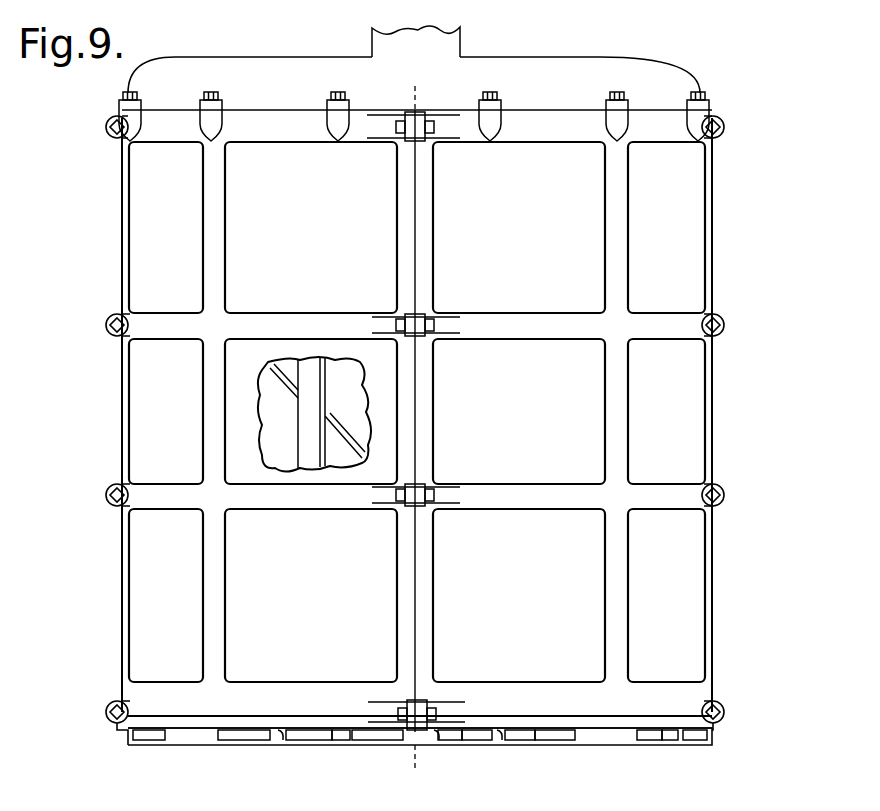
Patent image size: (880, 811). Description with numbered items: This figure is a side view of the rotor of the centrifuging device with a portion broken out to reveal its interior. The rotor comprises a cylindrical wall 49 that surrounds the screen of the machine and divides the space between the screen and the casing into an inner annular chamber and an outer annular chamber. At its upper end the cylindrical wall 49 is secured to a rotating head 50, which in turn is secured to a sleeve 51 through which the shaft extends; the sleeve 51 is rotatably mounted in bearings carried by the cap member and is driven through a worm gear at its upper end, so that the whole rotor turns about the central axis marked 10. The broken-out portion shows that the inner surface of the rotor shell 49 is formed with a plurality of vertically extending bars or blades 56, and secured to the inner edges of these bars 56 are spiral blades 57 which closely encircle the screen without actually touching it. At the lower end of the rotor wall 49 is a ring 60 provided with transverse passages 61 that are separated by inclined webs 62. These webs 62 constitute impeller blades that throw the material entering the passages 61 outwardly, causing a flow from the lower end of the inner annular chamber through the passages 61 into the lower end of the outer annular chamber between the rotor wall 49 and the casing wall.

The center bar 10 is at (416, 432).
The cylindrical wall 49 is at (680, 411).
The rotating head 50 is at (610, 70).
The sleeve 51 is at (445, 48).
The vertically extending bars or blades 56 is at (305, 428).
The spiral blades 57 is at (338, 420).
The ring 60 is at (623, 735).
The transverse passages 61 is at (252, 738).
The inclined webs 62 is at (283, 737).